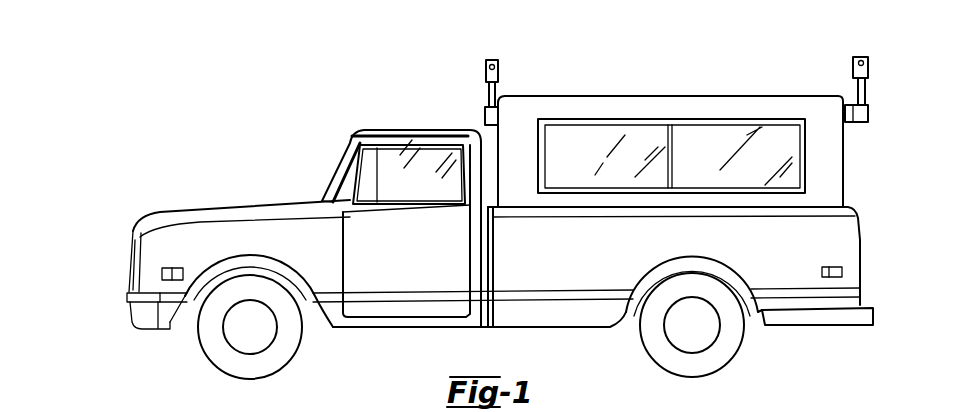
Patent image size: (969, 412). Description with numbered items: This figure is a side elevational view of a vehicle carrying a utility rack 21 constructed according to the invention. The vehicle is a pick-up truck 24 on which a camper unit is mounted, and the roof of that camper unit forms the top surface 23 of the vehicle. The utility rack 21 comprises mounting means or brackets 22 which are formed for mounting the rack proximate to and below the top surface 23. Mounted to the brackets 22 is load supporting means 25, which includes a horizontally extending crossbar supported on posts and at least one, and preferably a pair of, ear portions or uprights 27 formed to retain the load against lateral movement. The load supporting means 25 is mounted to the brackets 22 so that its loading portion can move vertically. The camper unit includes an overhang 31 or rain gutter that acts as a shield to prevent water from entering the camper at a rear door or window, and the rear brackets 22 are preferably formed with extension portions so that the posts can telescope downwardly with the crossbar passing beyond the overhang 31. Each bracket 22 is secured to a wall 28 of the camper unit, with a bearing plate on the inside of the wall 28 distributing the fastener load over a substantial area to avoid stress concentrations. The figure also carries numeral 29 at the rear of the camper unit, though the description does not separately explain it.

The utility rack 21 is at (652, 75).
The mounting brackets 22 is at (485, 117).
The top surface 23 is at (701, 118).
The pick-up truck 24 is at (393, 281).
The load supporting means 25 is at (501, 87).
The ear portions or uprights 27 is at (499, 60).
The wall of the camper unit 28 is at (493, 150).
The cap rear wall 29 is at (845, 153).
The overhang 31 is at (847, 94).